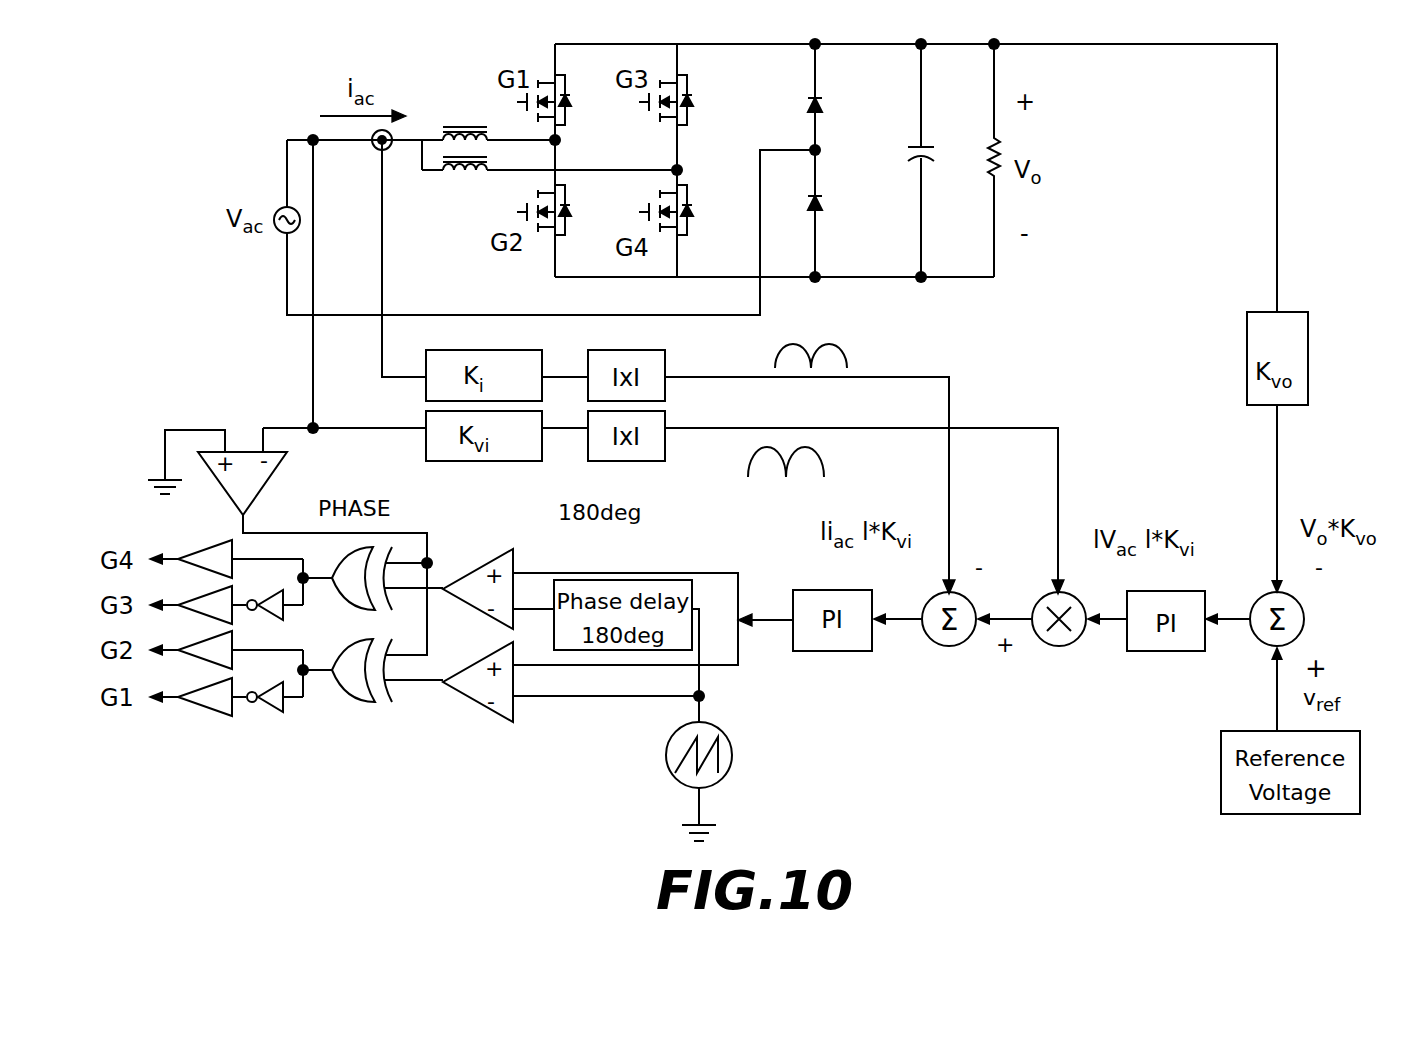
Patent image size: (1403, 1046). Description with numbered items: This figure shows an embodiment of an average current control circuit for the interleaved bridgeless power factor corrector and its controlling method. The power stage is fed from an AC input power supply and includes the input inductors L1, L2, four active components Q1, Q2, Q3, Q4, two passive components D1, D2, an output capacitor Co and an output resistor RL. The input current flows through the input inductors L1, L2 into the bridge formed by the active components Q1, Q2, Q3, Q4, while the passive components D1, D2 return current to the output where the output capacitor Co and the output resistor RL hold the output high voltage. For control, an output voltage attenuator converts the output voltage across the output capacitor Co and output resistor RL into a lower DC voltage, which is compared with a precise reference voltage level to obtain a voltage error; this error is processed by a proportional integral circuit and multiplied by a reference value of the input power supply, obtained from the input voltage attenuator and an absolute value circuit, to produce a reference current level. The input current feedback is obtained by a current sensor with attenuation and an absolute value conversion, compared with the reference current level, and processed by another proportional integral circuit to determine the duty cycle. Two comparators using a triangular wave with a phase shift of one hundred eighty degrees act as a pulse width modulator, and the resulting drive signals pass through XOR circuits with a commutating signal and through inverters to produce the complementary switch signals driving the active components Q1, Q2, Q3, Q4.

The active component Q1 is at (559, 100).
The active component Q2 is at (559, 210).
The active component Q3 is at (683, 100).
The active component Q4 is at (683, 210).
The input inductor L1 is at (465, 111).
The input inductor L2 is at (465, 191).
The passive component D1 is at (835, 97).
The passive component D2 is at (835, 213).
The output capacitor Co is at (904, 160).
The output resistor RL is at (975, 160).